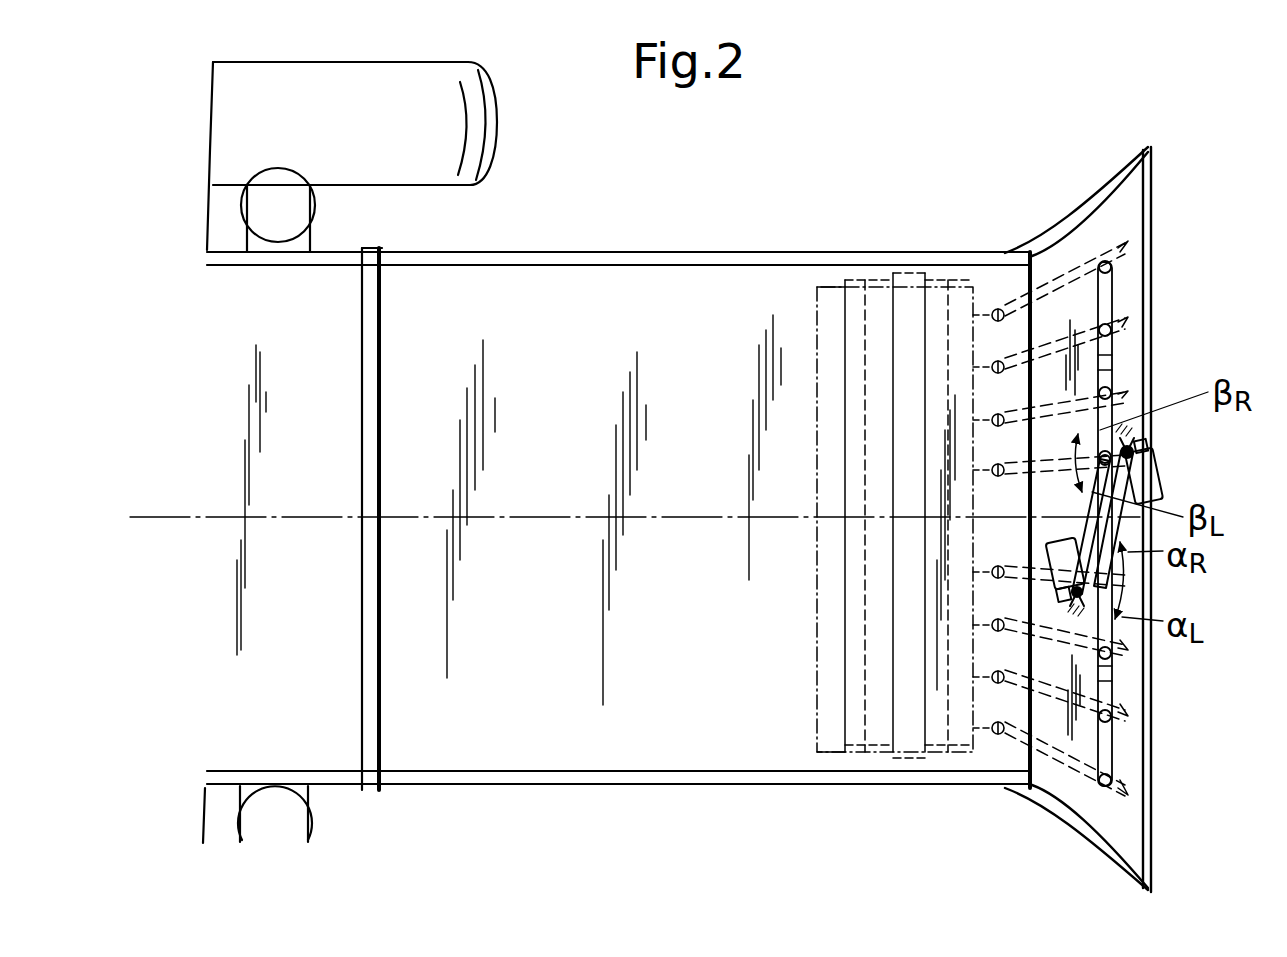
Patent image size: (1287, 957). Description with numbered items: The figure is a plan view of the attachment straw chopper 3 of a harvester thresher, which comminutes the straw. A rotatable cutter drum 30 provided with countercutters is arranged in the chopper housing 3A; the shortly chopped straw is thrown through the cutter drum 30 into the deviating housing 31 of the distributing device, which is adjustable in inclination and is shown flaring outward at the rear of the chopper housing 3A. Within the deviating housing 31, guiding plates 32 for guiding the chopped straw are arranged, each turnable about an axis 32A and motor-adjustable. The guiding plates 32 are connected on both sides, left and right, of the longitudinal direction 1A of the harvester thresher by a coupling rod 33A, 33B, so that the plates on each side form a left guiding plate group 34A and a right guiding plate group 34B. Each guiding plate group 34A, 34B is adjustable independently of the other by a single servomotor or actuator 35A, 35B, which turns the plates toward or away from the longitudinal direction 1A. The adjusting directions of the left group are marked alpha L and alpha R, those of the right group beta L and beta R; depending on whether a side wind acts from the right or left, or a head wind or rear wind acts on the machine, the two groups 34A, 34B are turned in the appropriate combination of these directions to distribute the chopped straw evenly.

The longitudinal direction 1A is at (160, 520).
The attachment straw chopper 3 is at (712, 244).
The chopper housing 3A is at (528, 788).
The cutter drum 30 is at (827, 603).
The deviating housing 31 is at (1058, 206).
The guiding plates 32 is at (1091, 263).
The axis 32A is at (996, 310).
The coupling rod 33A is at (1100, 690).
The coupling rod 33B is at (1105, 348).
The left guiding plate group 34A is at (1122, 675).
The right guiding plate group 34B is at (1122, 362).
The servomotor 35A is at (1142, 480).
The servomotor 35B is at (1068, 598).